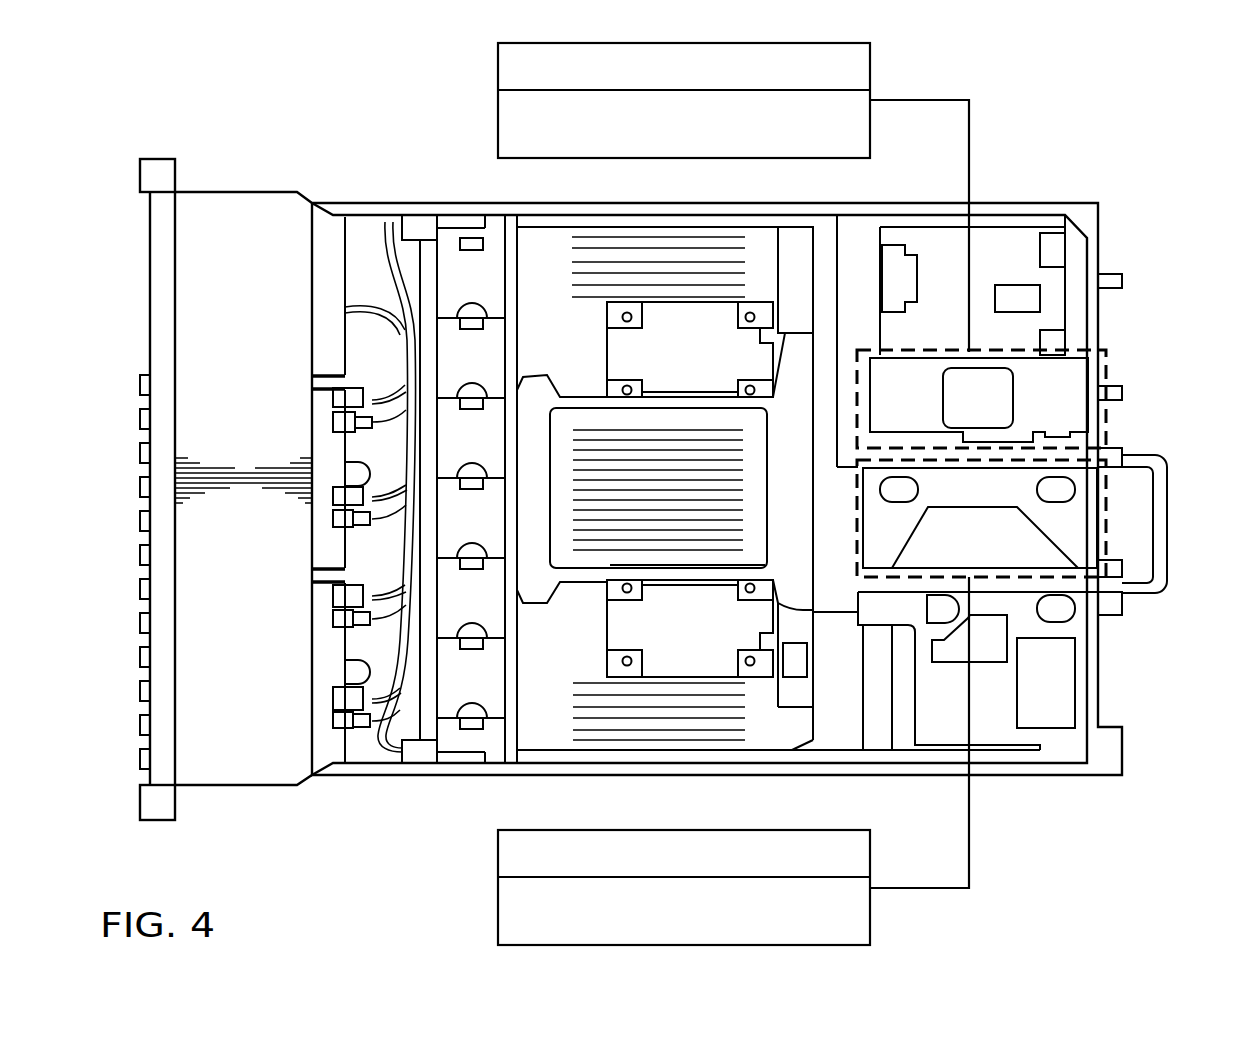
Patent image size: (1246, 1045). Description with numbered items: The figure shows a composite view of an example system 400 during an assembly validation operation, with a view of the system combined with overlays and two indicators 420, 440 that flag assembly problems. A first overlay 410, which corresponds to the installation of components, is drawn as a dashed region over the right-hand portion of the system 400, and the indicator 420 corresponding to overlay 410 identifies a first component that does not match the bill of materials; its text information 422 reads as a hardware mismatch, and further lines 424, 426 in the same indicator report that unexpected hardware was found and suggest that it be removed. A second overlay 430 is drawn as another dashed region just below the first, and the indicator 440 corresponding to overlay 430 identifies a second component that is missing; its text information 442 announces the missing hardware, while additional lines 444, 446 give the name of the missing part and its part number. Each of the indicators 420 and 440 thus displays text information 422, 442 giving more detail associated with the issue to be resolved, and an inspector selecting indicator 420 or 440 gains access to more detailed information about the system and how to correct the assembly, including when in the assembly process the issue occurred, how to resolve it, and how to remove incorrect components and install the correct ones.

The system 400 is at (1145, 76).
The first overlay 410 is at (1106, 356).
The indicator 420 is at (695, 195).
The text information 422 is at (500, 63).
The unexpected hardware found message 424 is at (500, 106).
The suggestion to remove 426 is at (500, 140).
The overlay 430 is at (1106, 518).
The indicator 440 is at (695, 763).
The text information 442 is at (500, 854).
The missing hardware name 444 is at (500, 899).
The missing hardware part number 446 is at (500, 928).